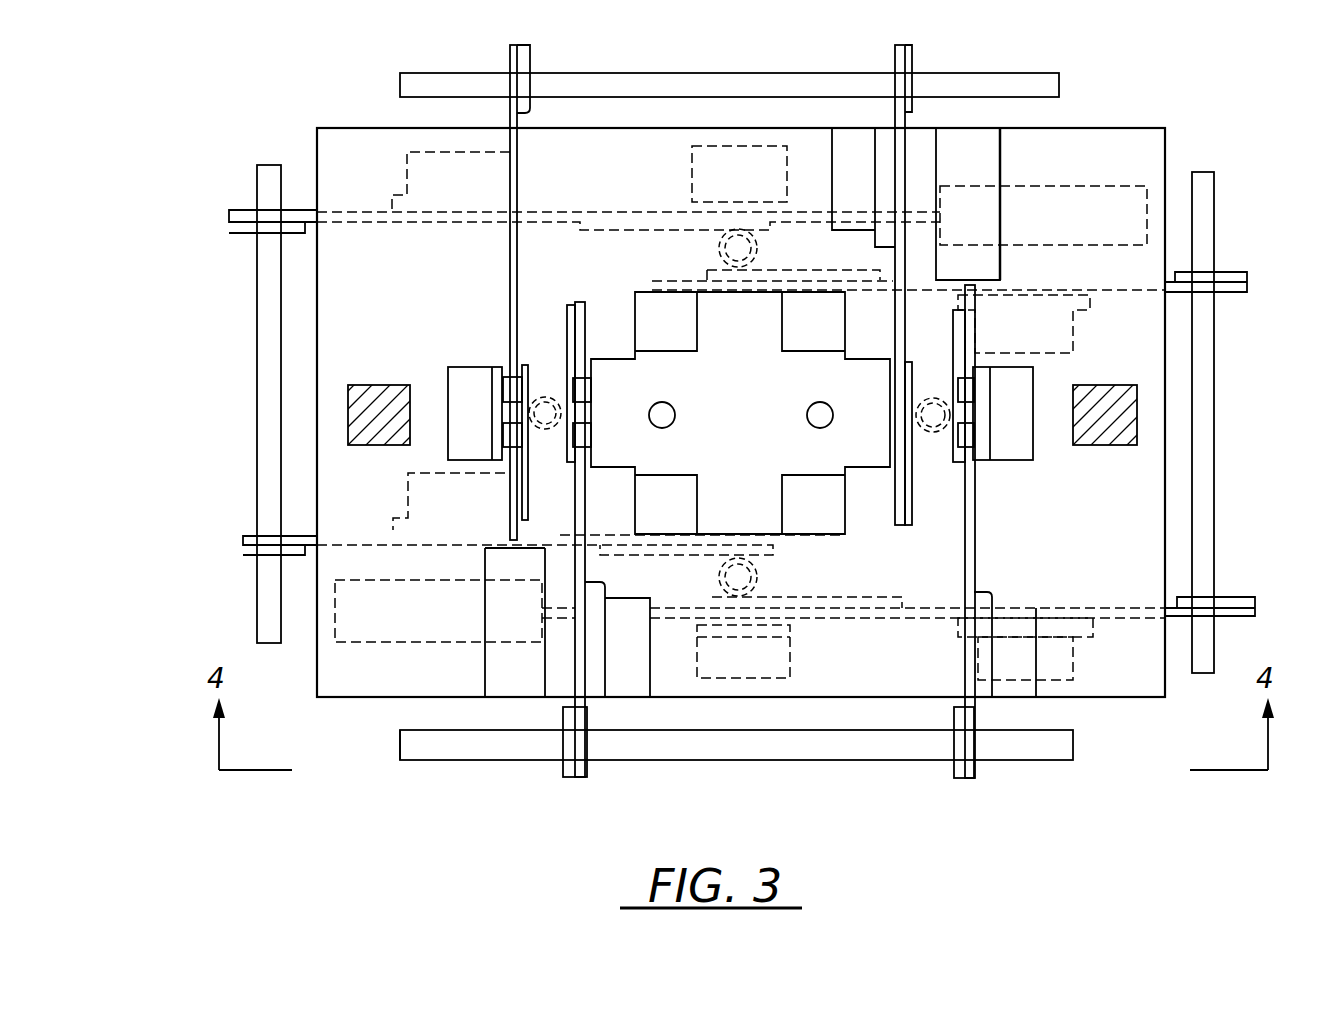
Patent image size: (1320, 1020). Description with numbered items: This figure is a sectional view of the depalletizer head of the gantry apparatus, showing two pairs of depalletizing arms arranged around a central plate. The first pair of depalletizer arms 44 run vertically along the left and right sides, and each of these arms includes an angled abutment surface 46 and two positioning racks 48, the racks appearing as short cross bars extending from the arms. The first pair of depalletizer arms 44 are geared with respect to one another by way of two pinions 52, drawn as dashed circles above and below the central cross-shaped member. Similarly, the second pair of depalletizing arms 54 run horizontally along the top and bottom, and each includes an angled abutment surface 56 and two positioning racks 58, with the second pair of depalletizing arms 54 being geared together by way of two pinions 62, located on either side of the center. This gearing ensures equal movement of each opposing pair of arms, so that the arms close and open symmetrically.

The first depalletizer arms 44 is at (263, 444).
The first angled abutment surface 46 is at (1193, 572).
The first positioning racks 48 is at (1142, 290).
The pinions 52 is at (755, 250).
The second depalletizing arms 54 is at (638, 80).
The second angled abutment surface 56 is at (423, 730).
The second positioning racks 58 is at (528, 127).
The pinions 62 is at (548, 396).